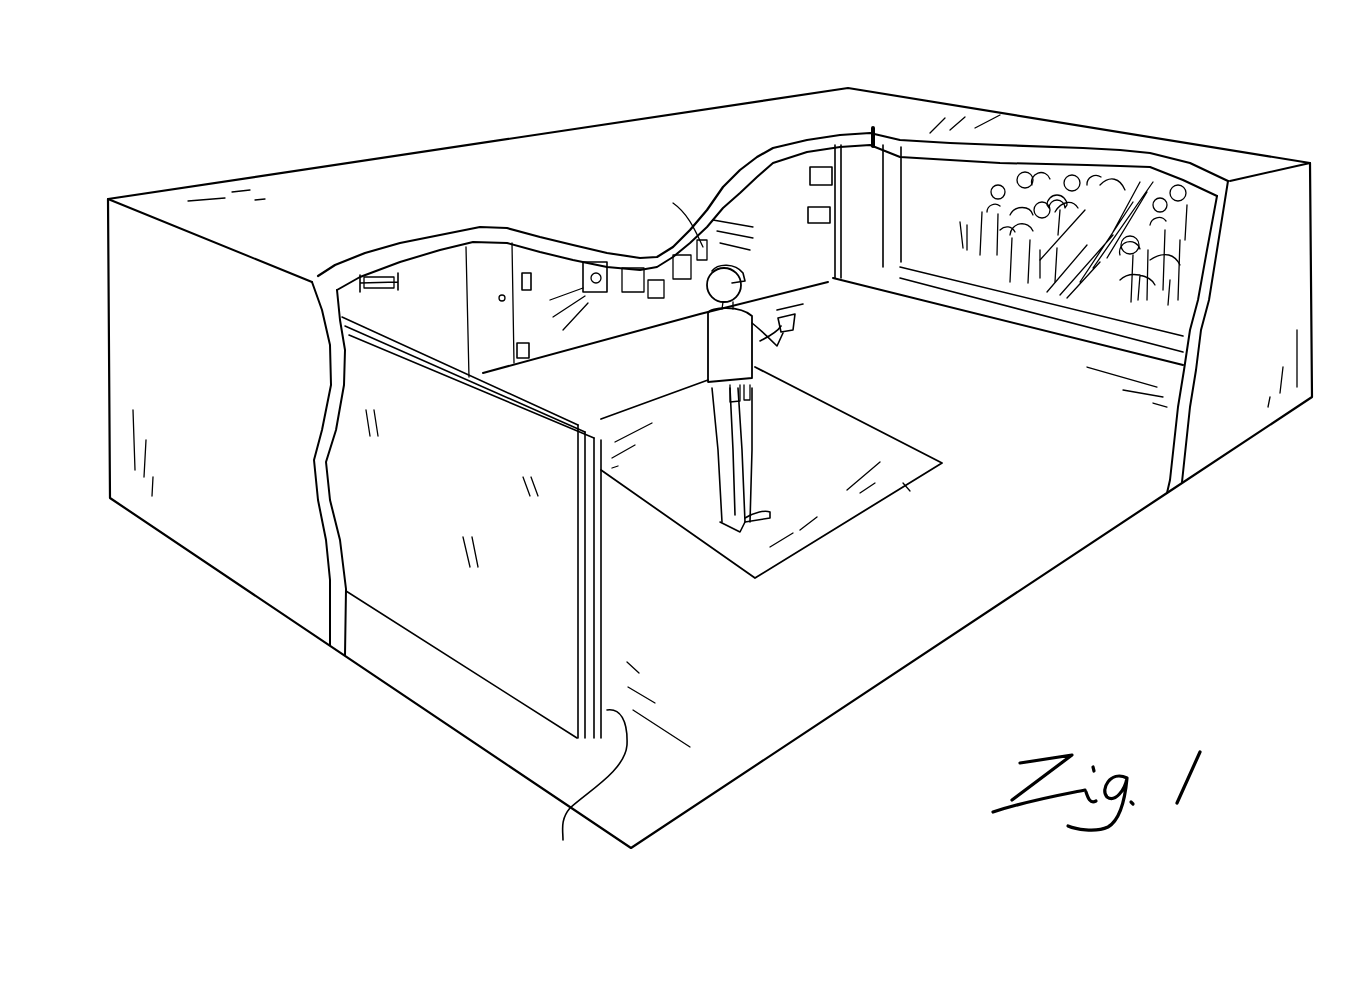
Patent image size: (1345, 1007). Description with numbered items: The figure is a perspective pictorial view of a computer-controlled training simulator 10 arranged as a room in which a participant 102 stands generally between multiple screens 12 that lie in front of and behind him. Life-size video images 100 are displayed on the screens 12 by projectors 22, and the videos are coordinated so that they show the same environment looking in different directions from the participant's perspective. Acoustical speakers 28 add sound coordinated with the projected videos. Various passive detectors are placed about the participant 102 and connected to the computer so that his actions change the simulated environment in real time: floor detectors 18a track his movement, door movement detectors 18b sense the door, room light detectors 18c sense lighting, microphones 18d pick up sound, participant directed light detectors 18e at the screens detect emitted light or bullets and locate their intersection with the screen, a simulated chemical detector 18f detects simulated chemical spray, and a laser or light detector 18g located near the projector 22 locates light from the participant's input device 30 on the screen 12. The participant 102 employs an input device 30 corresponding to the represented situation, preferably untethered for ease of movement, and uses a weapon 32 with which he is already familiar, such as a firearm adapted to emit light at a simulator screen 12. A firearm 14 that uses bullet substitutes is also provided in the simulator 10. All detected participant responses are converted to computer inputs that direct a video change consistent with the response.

The computer-controlled training simulator 10 is at (1222, 115).
The screen 12 is at (408, 598).
The firearm 14 is at (749, 276).
The input device 30 is at (749, 176).
The weapon 32 is at (797, 308).
The floor detector 18a is at (905, 487).
The door movement detector 18b is at (533, 353).
The room light detector 18c is at (537, 277).
The microphone 18d is at (812, 165).
The participant directed light detector 18e is at (580, 794).
The simulated chemical detector 18f is at (847, 193).
The laser or light detector 18g is at (687, 266).
The projector 22 is at (610, 262).
The acoustical speaker 28 is at (373, 273).
The video image 100 is at (1100, 193).
The participant 102 is at (742, 487).